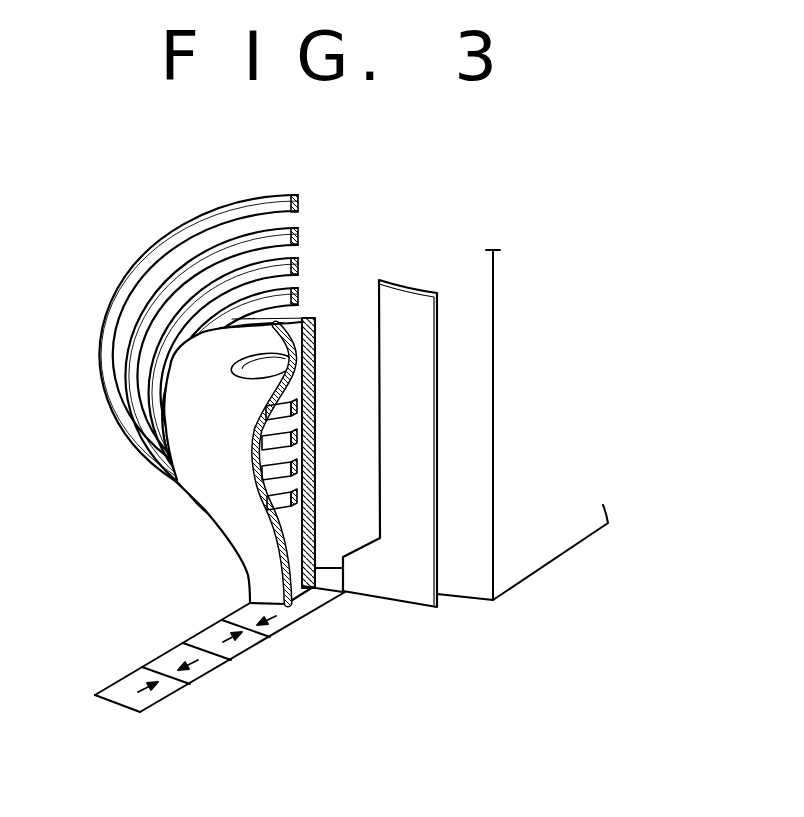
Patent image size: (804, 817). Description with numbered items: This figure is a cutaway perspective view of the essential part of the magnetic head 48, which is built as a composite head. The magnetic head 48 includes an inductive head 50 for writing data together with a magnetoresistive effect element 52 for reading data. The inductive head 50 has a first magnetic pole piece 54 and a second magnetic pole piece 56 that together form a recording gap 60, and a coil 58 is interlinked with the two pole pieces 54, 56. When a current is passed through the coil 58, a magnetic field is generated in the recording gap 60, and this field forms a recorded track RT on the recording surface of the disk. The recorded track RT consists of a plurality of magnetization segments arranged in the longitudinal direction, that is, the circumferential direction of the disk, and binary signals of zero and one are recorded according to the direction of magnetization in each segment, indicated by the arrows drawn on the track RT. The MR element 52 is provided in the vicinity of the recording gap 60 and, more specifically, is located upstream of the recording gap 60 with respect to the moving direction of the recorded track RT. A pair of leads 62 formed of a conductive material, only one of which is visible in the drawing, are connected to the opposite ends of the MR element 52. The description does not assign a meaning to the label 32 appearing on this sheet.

The wall 32 is at (553, 537).
The magnetic head 48 is at (378, 615).
The inductive head 50 is at (313, 228).
The magnetoresistive effect element 52 is at (331, 578).
The first magnetic pole piece 54 is at (317, 330).
The second magnetic pole piece 56 is at (207, 468).
The coil 58 is at (127, 270).
The recording gap 60 is at (297, 591).
The leads 62 is at (407, 310).
The recorded track RT is at (162, 662).